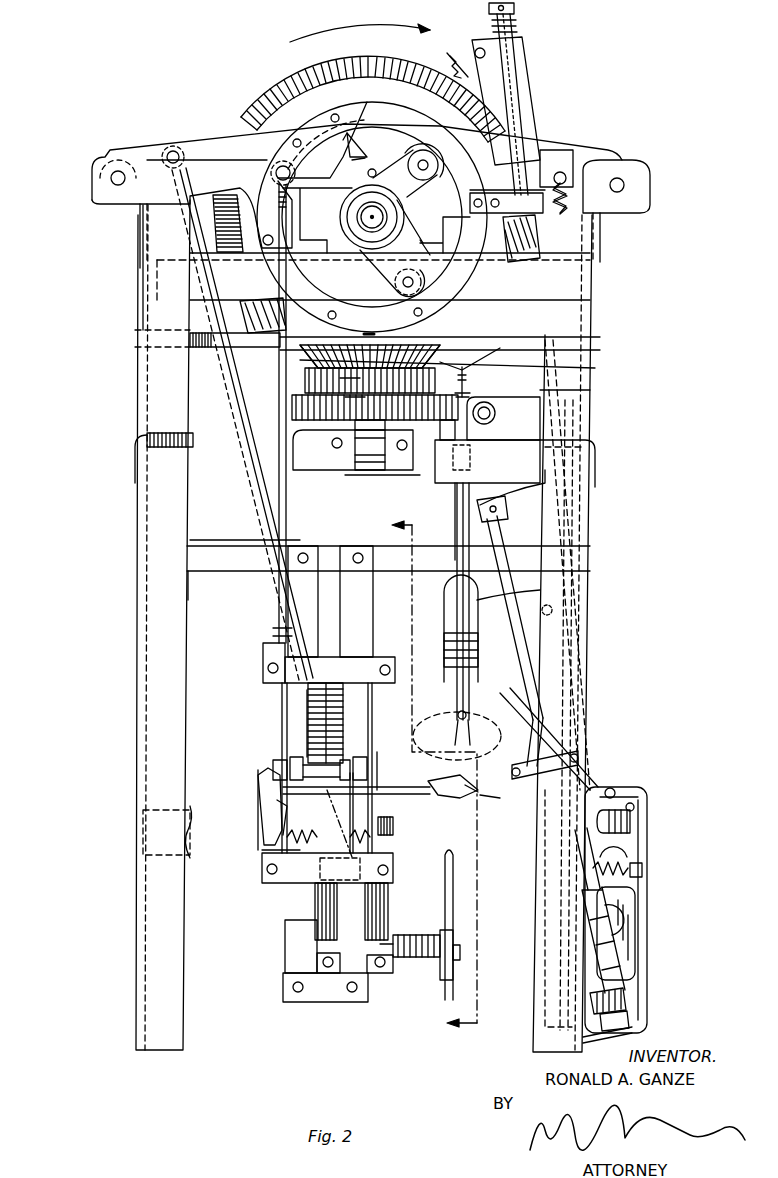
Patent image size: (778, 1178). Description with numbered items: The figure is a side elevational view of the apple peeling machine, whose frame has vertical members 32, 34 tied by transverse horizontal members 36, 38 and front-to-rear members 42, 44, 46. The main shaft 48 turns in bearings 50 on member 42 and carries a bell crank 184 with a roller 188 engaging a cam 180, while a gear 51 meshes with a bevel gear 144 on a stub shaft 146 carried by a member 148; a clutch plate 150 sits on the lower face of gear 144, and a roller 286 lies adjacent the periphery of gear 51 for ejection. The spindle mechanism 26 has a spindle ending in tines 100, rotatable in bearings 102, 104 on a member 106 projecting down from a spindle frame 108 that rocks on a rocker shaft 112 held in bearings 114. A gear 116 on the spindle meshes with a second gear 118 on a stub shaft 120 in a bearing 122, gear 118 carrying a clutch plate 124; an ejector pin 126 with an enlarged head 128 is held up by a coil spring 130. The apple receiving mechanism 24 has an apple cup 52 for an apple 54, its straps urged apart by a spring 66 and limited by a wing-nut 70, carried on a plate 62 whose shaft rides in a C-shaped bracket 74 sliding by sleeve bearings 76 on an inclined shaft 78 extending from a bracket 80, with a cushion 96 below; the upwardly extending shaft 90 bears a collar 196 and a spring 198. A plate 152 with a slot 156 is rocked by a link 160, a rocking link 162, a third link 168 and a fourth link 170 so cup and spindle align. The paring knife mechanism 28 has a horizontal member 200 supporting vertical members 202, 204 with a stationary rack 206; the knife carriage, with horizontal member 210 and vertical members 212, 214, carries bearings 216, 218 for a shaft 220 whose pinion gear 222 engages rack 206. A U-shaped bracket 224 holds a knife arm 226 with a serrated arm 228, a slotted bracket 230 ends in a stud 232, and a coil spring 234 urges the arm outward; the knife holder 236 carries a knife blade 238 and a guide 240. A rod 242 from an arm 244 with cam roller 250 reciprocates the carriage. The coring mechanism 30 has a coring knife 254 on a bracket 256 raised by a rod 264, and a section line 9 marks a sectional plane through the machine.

The second collar 196 is at (515, 10).
The spring 198 is at (518, 28).
The gear 51 is at (315, 72).
The cam 180 is at (310, 125).
The horizontally extending arm 244 is at (352, 148).
The cam roller 250 is at (363, 158).
The roller 188 is at (444, 153).
The main shaft 48 is at (372, 217).
The bell crank 184 is at (412, 195).
The bearings 50 is at (420, 240).
The upper transverse horizontal member 36 is at (140, 242).
The horizontal member 42 is at (220, 275).
The stub shaft 146 is at (367, 332).
The roller 286 is at (525, 330).
The member 148 is at (268, 343).
The bevel gear 144 is at (330, 386).
The enlarged head 128 is at (465, 370).
The ejector pin 126 is at (466, 380).
The clutch plate 150 is at (340, 387).
The clutch plate 124 is at (345, 398).
The coil spring 130 is at (455, 394).
The second gear 118 is at (292, 408).
The upwardly extending shaft 90 is at (593, 367).
The bearings 114 is at (593, 393).
The rocker shaft 112 is at (540, 415).
The stub shaft 120 is at (337, 449).
The gear 116 is at (445, 440).
The bearing 102 is at (475, 458).
The bearing 122 is at (355, 465).
The spindle frame 108 is at (360, 480).
The middle transverse horizontal member 38 is at (135, 462).
The horizontal member 44 is at (238, 478).
The rod 264 is at (300, 518).
The rod 242 is at (287, 522).
The member 106 is at (455, 515).
The section line 9 is at (426, 774).
The bracket 80 is at (485, 505).
The inclined shaft 78 is at (590, 556).
The vertical member 34 is at (160, 603).
The horizontal member 200 is at (208, 572).
The vertical member 202 is at (298, 578).
The vertical member 204 is at (352, 588).
The link 160 is at (540, 590).
The vertical member 32 is at (545, 610).
The spindle mechanism 26 is at (455, 632).
The stationary rack 206 is at (330, 660).
The bearing 104 is at (478, 655).
The tines 100 is at (478, 680).
The vertical member 212 is at (285, 702).
The vertical member 214 is at (345, 696).
The shaft 220 is at (295, 760).
The pinion gear 222 is at (352, 757).
The bearing 216 is at (290, 768).
The bearing 218 is at (377, 752).
The apple 54 is at (478, 725).
The knife blade 238 is at (450, 752).
The rocking link 162 is at (520, 730).
The fourth link 170 is at (590, 775).
The horizontal member 46 is at (190, 808).
The slotted bracket 230 is at (377, 778).
The U-shaped bracket 224 is at (262, 790).
The knife arm 226 is at (378, 788).
The apple receiving mechanism 24 is at (647, 786).
The paring knife mechanism 28 is at (256, 802).
The guide 240 is at (470, 782).
The knife holder 236 is at (462, 795).
The third link 168 is at (490, 798).
The apple cup 52 is at (630, 822).
The serrated arm 228 is at (283, 815).
The stud 232 is at (393, 838).
The slot 156 is at (615, 850).
The spring 66 is at (630, 866).
The coil spring 234 is at (262, 858).
The wing-nut 70 is at (642, 872).
The horizontal member 210 is at (283, 880).
The plate 152 is at (637, 905).
The coring knife 254 is at (453, 893).
The bracket 256 is at (410, 935).
The plate 62 is at (625, 930).
The C-shaped bracket 74 is at (610, 960).
The sleeve bearings 76 is at (626, 995).
The coring mechanism 30 is at (422, 966).
The cushion 96 is at (629, 1015).